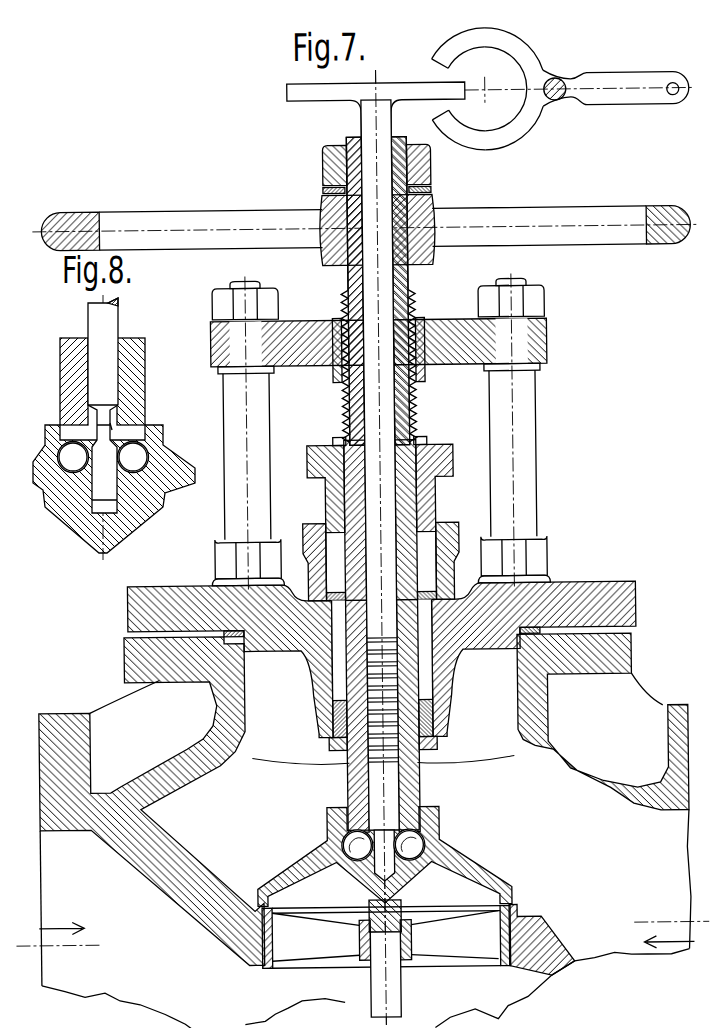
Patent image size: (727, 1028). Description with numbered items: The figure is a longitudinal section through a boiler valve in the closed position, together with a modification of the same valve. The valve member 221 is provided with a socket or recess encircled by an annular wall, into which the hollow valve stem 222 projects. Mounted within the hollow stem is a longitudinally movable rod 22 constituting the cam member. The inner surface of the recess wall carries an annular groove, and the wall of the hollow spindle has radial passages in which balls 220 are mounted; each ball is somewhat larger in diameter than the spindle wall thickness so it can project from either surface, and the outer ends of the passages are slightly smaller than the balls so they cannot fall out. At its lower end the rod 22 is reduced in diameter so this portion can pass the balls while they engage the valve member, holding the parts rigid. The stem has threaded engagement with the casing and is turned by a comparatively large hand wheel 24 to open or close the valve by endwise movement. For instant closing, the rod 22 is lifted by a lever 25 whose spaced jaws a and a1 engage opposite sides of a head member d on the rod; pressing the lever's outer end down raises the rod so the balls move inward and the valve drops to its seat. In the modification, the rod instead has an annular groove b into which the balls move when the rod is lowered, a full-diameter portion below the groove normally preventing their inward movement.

In FIG. 7, the rod 22 is at (381, 547).
In FIG. 8, the rod 22 is at (103, 405).
In FIG. 7, the balls 220 is at (348, 845).
In FIG. 8, the balls 220 is at (66, 453).
In FIG. 7, the valve member 221 is at (482, 889).
In FIG. 8, the valve member 221 is at (187, 492).
In FIG. 7, the valve stem 222 is at (350, 799).
In FIG. 8, the valve stem 222 is at (72, 373).
In FIG. 7, the hand wheel 24 is at (64, 219).
In FIG. 7, the lever 25 is at (561, 92).
In FIG. 7, the jaw a is at (478, 149).
In FIG. 7, the jaw a1 is at (464, 41).
In FIG. 7, the head member d is at (290, 96).
In FIG. 8, the annular groove b is at (110, 423).